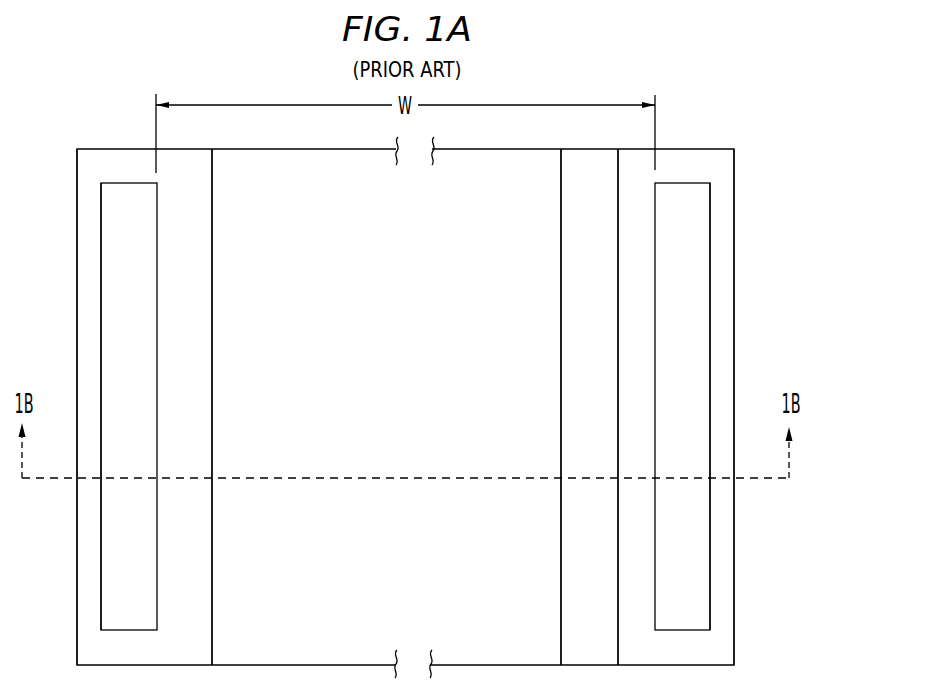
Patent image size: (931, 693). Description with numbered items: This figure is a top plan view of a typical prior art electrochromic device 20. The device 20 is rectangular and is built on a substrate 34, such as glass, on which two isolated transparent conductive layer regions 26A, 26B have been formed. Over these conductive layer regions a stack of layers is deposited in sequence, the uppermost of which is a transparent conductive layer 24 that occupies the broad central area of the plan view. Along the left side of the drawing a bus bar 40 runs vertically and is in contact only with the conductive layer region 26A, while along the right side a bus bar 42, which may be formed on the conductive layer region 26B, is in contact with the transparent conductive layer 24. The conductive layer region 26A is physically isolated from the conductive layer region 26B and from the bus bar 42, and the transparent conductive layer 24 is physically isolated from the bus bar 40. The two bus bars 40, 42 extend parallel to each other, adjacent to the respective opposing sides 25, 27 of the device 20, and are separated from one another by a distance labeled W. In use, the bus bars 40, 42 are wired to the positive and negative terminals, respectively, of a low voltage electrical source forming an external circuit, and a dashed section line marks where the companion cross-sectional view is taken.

The electrochromic device 20 is at (778, 207).
The transparent conductive layer 24 is at (477, 419).
The side 25 is at (77, 352).
The transparent conductive layer region 26A is at (162, 661).
The transparent conductive layer region 26B is at (640, 662).
The side 27 is at (735, 353).
The substrate 34 is at (600, 572).
The bus bar 40 is at (115, 310).
The bus bar 42 is at (697, 308).